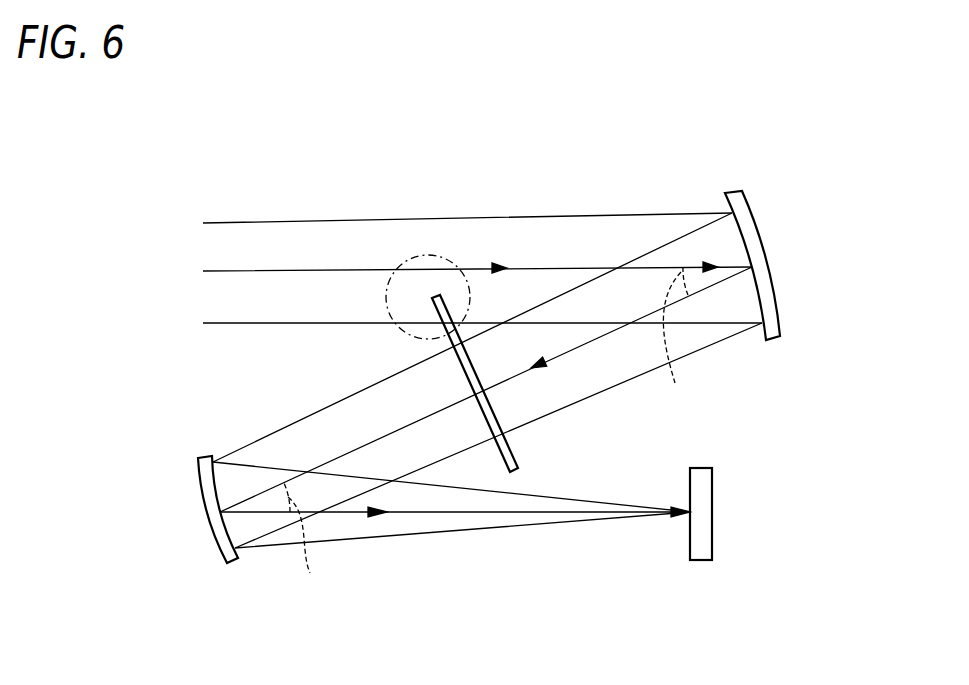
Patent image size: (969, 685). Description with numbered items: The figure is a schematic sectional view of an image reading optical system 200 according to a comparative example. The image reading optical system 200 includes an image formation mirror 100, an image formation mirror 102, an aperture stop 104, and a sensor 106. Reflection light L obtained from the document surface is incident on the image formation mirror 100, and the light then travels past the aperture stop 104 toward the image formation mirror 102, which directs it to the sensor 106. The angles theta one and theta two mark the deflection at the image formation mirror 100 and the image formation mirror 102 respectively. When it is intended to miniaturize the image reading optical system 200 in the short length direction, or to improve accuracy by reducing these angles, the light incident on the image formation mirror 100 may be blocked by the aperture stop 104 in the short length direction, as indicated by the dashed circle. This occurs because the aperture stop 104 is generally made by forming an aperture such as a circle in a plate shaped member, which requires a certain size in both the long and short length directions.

The image reading optical system 200 is at (528, 145).
The image formation mirror 100 is at (757, 220).
The image formation mirror 102 is at (217, 535).
The aperture stop 104 is at (508, 441).
The sensor 106 is at (712, 490).